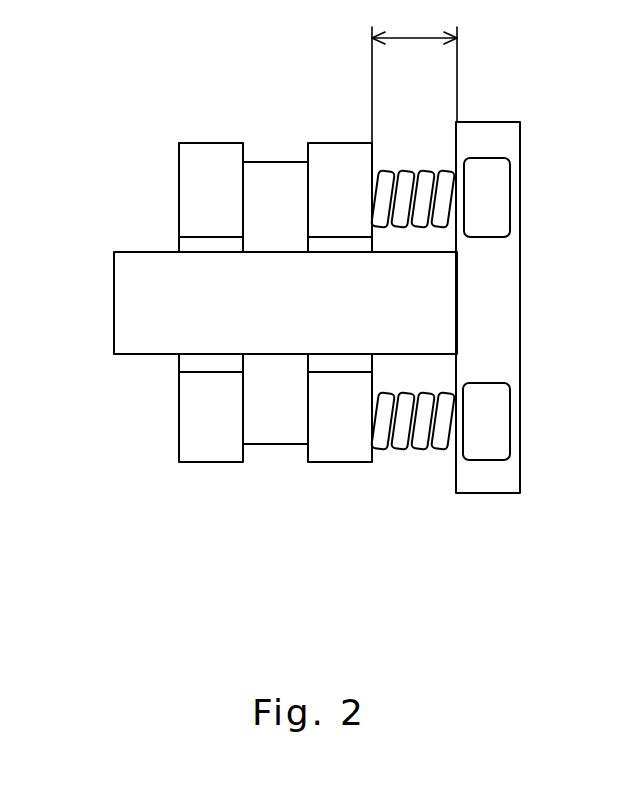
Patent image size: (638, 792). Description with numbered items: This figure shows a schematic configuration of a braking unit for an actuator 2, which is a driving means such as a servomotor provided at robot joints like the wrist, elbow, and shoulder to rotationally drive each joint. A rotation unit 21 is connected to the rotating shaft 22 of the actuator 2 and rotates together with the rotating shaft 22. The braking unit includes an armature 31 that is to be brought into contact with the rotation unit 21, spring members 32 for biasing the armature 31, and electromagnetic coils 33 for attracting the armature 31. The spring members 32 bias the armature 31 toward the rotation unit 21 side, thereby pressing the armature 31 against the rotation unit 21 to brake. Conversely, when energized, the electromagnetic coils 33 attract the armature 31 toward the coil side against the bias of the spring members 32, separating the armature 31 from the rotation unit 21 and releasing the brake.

The actuator 2 is at (67, 211).
The rotation unit 21 is at (273, 162).
The rotating shaft 22 is at (117, 311).
The armature 31 is at (338, 152).
The spring members 32 is at (417, 168).
The electromagnetic coils 33 is at (500, 193).